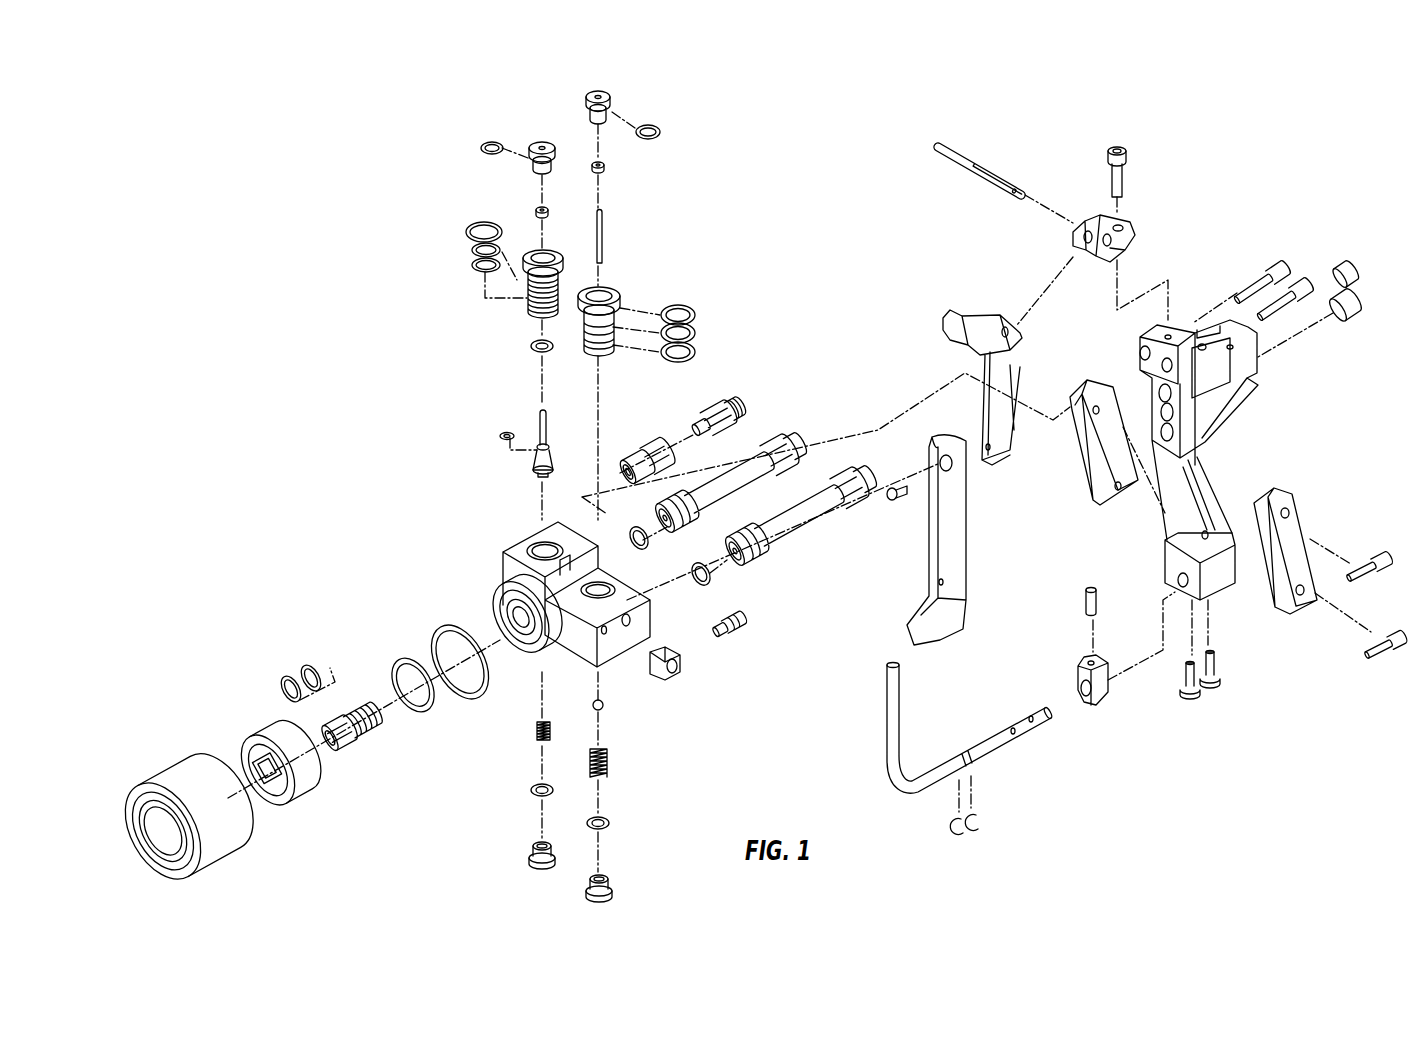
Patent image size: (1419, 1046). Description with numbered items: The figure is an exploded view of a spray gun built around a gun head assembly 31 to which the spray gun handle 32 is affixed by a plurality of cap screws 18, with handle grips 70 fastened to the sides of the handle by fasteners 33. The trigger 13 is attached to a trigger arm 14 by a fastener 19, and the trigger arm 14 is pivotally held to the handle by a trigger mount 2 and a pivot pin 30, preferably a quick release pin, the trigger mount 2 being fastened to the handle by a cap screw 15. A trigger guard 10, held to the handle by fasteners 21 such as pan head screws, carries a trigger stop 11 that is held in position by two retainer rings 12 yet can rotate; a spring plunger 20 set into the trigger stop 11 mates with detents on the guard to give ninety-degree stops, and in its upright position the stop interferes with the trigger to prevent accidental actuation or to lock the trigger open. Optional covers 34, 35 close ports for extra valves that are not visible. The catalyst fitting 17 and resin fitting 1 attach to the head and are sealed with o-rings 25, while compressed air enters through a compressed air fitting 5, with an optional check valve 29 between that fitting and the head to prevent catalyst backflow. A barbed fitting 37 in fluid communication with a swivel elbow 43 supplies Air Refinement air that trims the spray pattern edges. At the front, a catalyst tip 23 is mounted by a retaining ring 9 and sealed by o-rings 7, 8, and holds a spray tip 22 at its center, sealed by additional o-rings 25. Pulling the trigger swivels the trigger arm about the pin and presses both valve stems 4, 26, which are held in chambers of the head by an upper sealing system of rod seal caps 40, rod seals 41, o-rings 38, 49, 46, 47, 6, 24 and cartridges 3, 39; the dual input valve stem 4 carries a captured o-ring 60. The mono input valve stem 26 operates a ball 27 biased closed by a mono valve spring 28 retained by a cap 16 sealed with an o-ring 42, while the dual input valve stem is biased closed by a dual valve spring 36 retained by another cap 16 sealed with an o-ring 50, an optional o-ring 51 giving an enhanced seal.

The resin fitting 1 is at (766, 521).
The trigger mount 2 is at (1079, 226).
The cartridge 3 is at (525, 301).
The dual input valve stem 4 is at (535, 471).
The compressed air fitting 5 is at (706, 406).
The o-ring 6 is at (695, 312).
The o-ring 7 is at (398, 668).
The o-ring 8 is at (447, 641).
The retaining ring 9 is at (228, 860).
The trigger guard 10 is at (1012, 740).
The trigger stop 11 is at (1100, 695).
The retainer rings 12 is at (972, 834).
The trigger 13 is at (968, 560).
The trigger arm 14 is at (963, 320).
The cap screw 15 is at (1106, 149).
The cap 16 is at (588, 889).
The catalyst fitting 17 is at (770, 437).
The cap screws 18 is at (1281, 268).
The fastener 19 is at (896, 500).
The spring plunger 20 is at (1086, 609).
The fasteners 21 is at (1212, 685).
The spray tip 22 is at (358, 743).
The catalyst tip 23 is at (263, 735).
The o-ring 24 is at (695, 352).
The o-rings 25 is at (646, 552).
The mono input valve stem 26 is at (603, 236).
The ball 27 is at (603, 709).
The mono valve spring 28 is at (608, 766).
The check valve 29 is at (648, 445).
The pivot pin 30 is at (992, 192).
The gun head assembly 31 is at (519, 552).
The spray gun handle 32 is at (1216, 330).
The fasteners 33 is at (1380, 650).
The cover 34 is at (1341, 265).
The cover 35 is at (1359, 313).
The dual valve spring 36 is at (535, 732).
The fitting 37 is at (726, 633).
The o-ring 38 is at (658, 128).
The cartridge 39 is at (619, 296).
The rod seal caps 40 is at (538, 142).
The rod seals 41 is at (605, 167).
The o-ring 42 is at (608, 827).
The elbow 43 is at (663, 679).
The o-ring 46 is at (468, 228).
The o-ring 47 is at (473, 265).
The o-ring 49 is at (481, 147).
The o-ring 50 is at (531, 790).
The o-ring 51 is at (531, 347).
The captured o-ring 60 is at (503, 432).
The handle grips 70 is at (1088, 461).